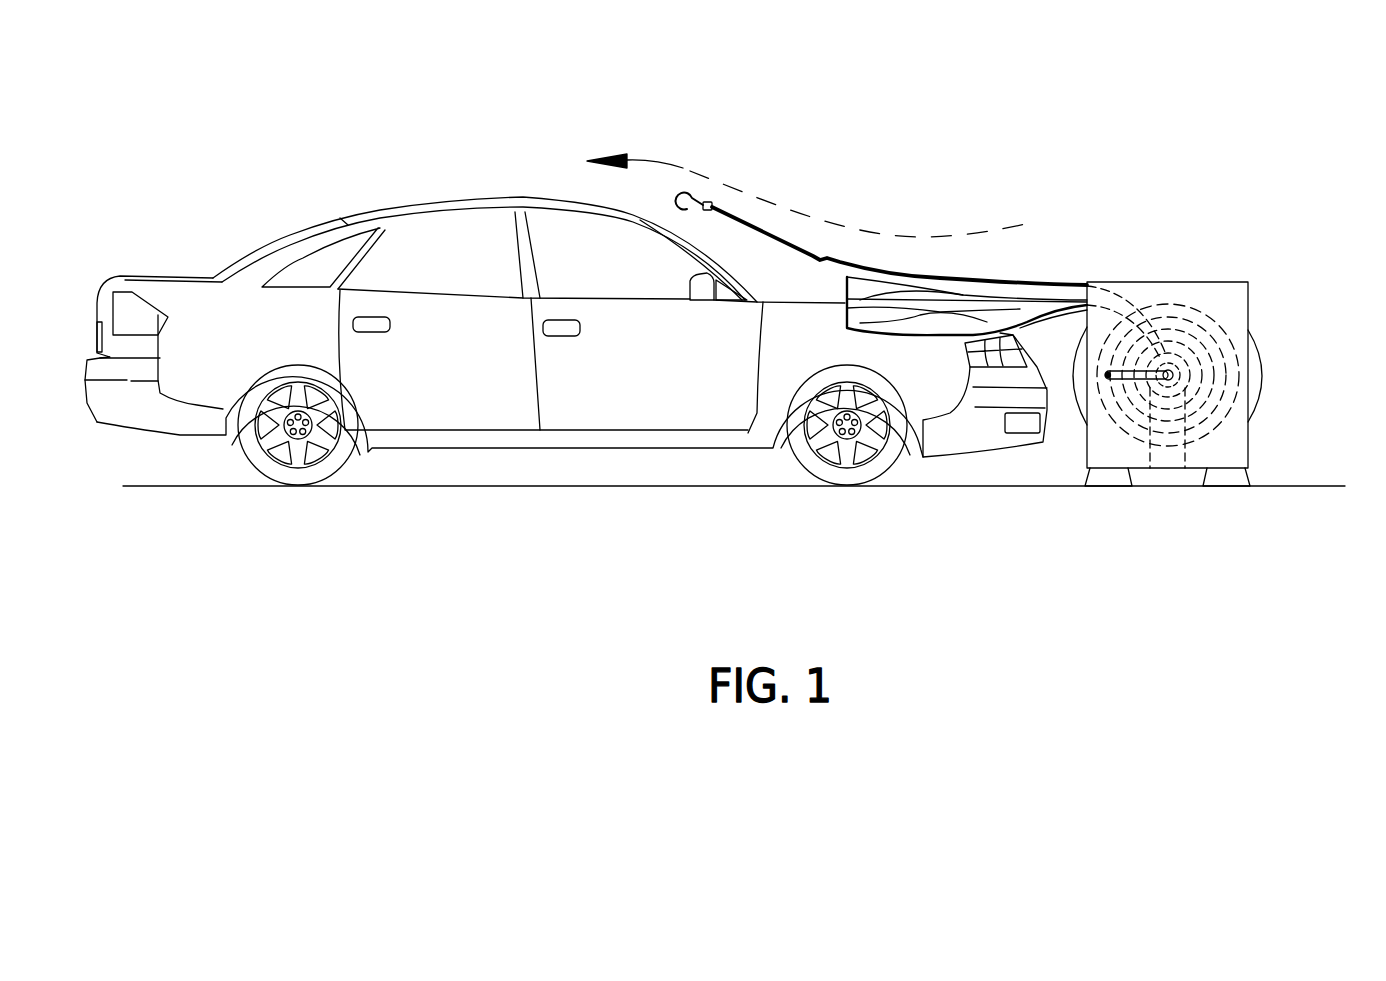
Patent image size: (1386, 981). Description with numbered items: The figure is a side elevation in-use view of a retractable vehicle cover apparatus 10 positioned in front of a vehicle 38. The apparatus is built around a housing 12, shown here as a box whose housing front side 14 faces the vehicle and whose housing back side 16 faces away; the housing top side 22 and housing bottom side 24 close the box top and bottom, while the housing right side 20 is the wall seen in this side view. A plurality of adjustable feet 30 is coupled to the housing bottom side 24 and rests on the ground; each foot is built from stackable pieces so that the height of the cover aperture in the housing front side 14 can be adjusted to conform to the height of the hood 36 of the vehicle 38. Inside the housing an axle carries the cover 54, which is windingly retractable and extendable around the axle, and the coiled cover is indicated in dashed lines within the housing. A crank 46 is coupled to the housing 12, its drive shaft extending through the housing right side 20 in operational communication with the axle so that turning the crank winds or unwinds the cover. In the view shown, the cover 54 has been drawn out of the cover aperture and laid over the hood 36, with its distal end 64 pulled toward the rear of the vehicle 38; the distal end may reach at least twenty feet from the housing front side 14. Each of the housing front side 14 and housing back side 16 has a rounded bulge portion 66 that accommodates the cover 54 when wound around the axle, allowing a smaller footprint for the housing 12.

The retractable vehicle cover apparatus 10 is at (1225, 119).
The housing 12 is at (1220, 292).
The housing front side 14 is at (1085, 430).
The housing back side 16 is at (1262, 407).
The housing right side 20 is at (1227, 443).
The housing top side 22 is at (1168, 281).
The housing bottom side 24 is at (1142, 461).
The adjustable feet 30 is at (1098, 487).
The hood 36 is at (820, 300).
The vehicle 38 is at (651, 393).
The crank 46 is at (1180, 366).
The cover 54 is at (1035, 302).
The distal end 64 is at (712, 205).
The rounded bulge portion 66 is at (1262, 379).